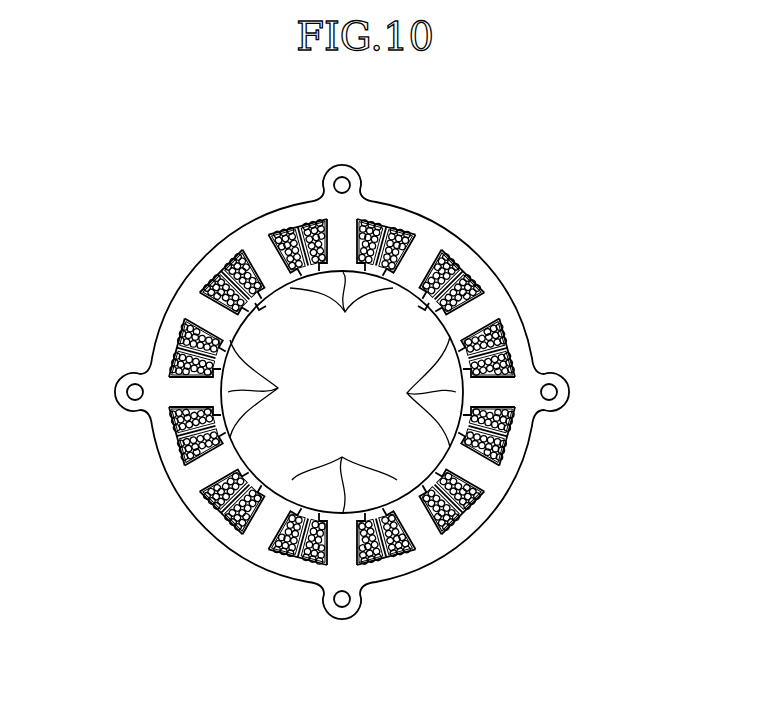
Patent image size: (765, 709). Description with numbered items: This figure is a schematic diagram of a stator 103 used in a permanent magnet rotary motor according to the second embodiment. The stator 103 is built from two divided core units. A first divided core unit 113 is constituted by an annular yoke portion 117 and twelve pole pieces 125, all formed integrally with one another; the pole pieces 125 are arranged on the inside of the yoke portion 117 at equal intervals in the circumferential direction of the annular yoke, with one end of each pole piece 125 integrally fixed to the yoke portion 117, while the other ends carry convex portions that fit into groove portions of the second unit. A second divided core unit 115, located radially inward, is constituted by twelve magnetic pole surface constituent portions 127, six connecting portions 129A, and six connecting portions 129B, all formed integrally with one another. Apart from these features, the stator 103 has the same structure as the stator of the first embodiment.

The stator 103 is at (477, 239).
The first divided core unit 113 is at (400, 216).
The second divided core unit 115 is at (503, 323).
The yoke portion 117 is at (480, 277).
The pole piece 125 is at (343, 242).
The magnetic pole surface constituent portion 127 is at (342, 392).
The connecting portion 129A is at (424, 309).
The connecting portion 129B is at (263, 309).